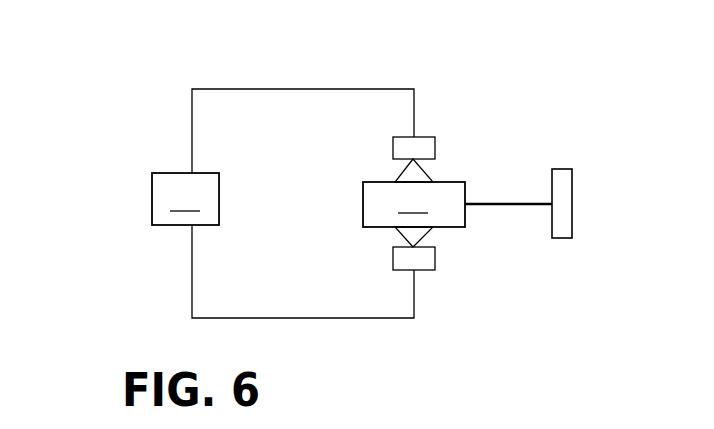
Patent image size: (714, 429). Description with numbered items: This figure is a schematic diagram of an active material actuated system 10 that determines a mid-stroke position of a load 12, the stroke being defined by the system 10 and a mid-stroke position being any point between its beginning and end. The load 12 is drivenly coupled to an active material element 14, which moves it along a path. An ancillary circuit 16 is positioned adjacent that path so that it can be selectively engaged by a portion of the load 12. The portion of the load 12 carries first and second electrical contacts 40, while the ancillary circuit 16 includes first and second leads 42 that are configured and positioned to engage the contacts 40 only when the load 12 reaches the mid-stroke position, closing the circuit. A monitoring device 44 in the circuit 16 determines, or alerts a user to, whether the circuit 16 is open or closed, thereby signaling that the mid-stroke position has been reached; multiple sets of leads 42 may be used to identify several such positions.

The active material actuated system 10 is at (148, 83).
The load 12 is at (414, 204).
The active material element 14 is at (518, 204).
The ancillary circuit 16 is at (400, 89).
The electrical contacts 40 is at (428, 172).
The leads 42 is at (435, 148).
The monitoring device 44 is at (185, 199).